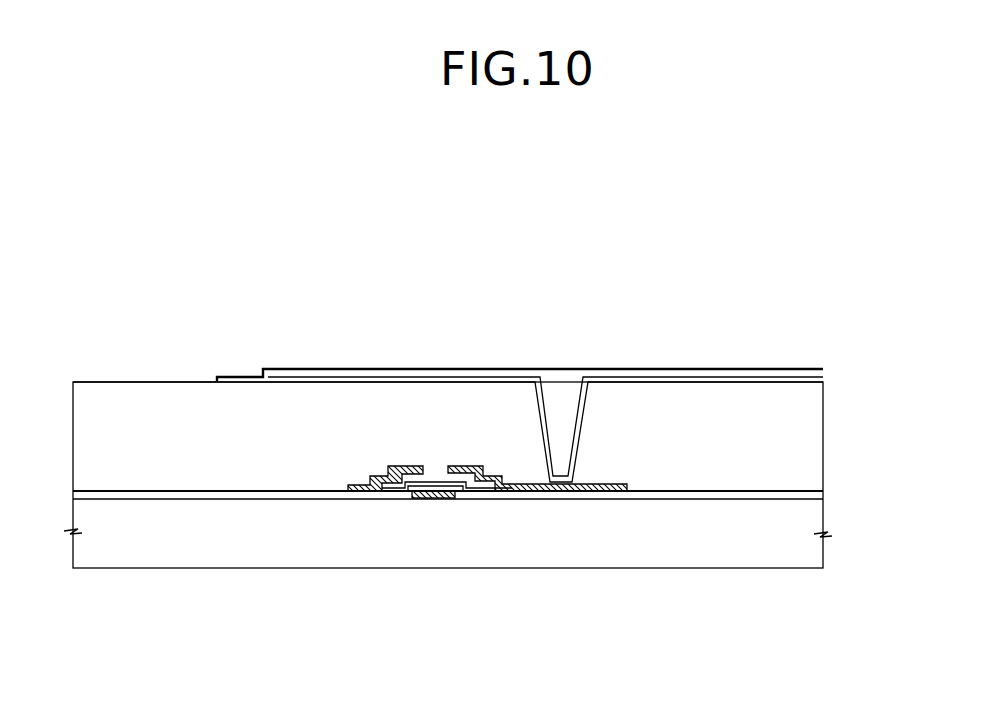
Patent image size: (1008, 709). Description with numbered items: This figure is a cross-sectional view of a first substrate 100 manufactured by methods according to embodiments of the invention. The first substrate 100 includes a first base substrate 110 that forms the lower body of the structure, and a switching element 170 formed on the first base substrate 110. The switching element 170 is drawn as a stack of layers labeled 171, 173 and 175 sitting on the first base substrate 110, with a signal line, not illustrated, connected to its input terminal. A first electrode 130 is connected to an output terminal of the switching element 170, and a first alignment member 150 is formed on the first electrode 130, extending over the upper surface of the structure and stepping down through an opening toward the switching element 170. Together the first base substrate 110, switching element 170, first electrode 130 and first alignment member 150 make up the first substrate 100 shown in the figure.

The first substrate 100 is at (513, 270).
The first base substrate 110 is at (815, 521).
The first electrode 130 is at (823, 380).
The first alignment member 150 is at (823, 371).
The switching element 170 is at (535, 636).
The gate electrode 171 is at (432, 499).
The source electrode 173 is at (361, 492).
The drain electrode 175 is at (513, 492).